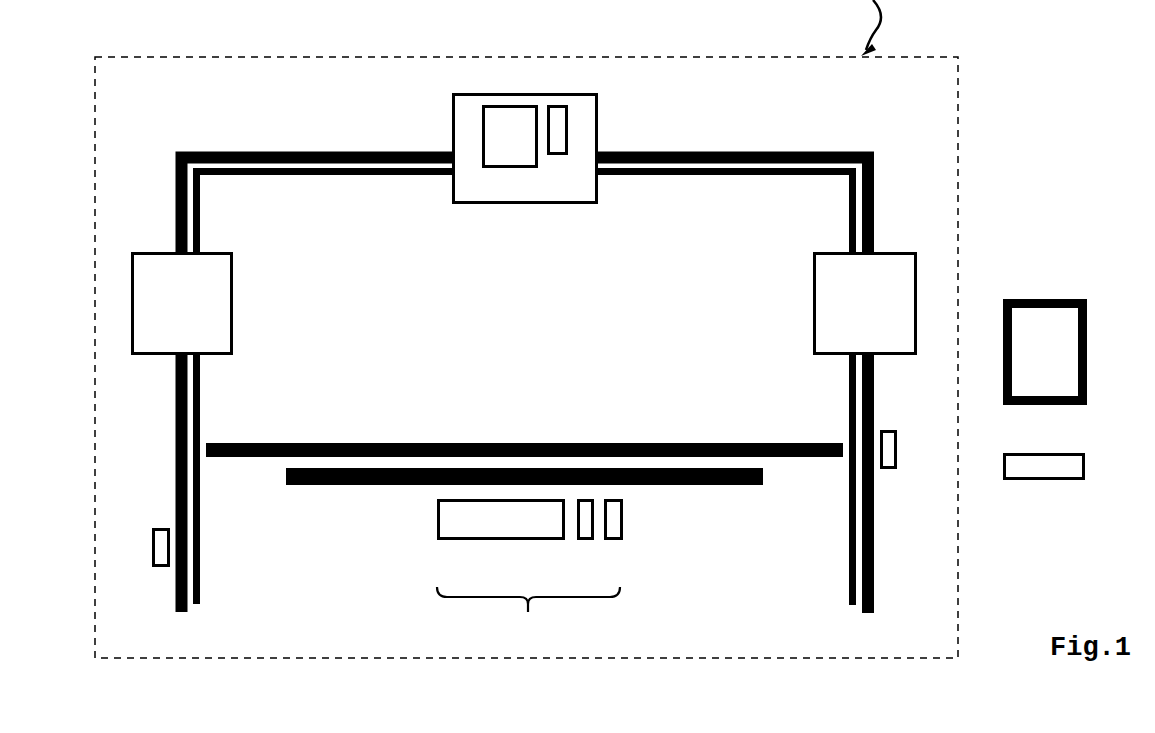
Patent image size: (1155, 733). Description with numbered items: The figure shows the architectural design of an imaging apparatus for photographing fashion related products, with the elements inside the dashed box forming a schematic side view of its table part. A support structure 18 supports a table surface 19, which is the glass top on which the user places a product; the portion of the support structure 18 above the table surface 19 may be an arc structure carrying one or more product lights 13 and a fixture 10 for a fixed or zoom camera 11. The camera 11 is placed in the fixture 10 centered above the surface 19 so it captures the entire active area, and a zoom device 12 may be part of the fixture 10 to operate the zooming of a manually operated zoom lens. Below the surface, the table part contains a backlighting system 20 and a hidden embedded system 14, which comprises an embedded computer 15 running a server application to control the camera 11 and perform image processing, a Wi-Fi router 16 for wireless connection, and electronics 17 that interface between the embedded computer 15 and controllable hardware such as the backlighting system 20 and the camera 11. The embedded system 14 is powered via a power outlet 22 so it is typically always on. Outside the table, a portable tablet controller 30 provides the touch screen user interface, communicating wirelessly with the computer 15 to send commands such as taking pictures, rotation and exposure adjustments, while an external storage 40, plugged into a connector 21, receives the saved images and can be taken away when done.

The fixture 10 is at (585, 118).
The camera 11 is at (497, 130).
The zoom device 12 is at (558, 142).
The lights 13 is at (215, 286).
The embedded system 14 is at (528, 615).
The embedded computer 15 is at (505, 526).
The Wi-Fi router 16 is at (584, 523).
The electronics 17 is at (615, 527).
The support structure 18 is at (248, 150).
The table surface 19 is at (662, 445).
The backlighting system 20 is at (337, 482).
The connector 21 is at (885, 445).
The power outlet 22 is at (163, 543).
The portable tablet controller 30 is at (1068, 327).
The storage 40 is at (1067, 468).